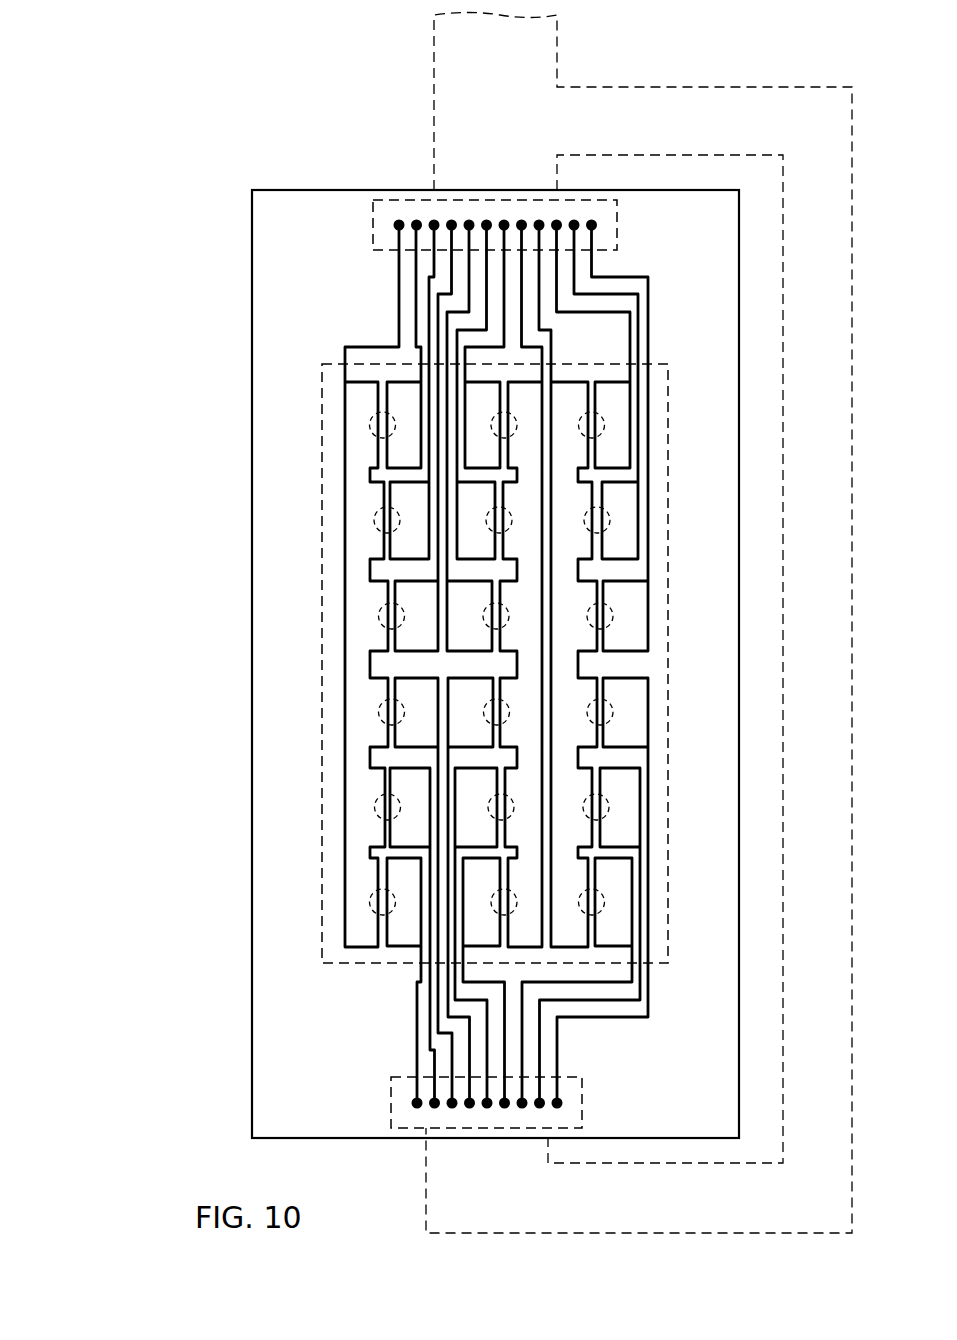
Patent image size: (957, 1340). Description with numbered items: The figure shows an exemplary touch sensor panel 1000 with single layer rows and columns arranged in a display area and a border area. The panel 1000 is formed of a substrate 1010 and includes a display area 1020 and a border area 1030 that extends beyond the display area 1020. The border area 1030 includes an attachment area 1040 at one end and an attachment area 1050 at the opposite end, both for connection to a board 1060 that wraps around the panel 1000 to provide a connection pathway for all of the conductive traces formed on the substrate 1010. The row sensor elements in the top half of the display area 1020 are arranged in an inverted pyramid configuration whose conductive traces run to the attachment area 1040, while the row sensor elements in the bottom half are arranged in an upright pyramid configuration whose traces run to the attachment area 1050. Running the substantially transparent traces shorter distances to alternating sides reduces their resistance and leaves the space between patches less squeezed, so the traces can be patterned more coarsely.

The panel 1000 is at (274, 148).
The substrate 1010 is at (252, 836).
The display area 1020 is at (320, 637).
The border area 1030 is at (283, 487).
The attachment area 1040 is at (373, 237).
The attachment area 1050 is at (391, 1087).
The board 1060 is at (433, 37).